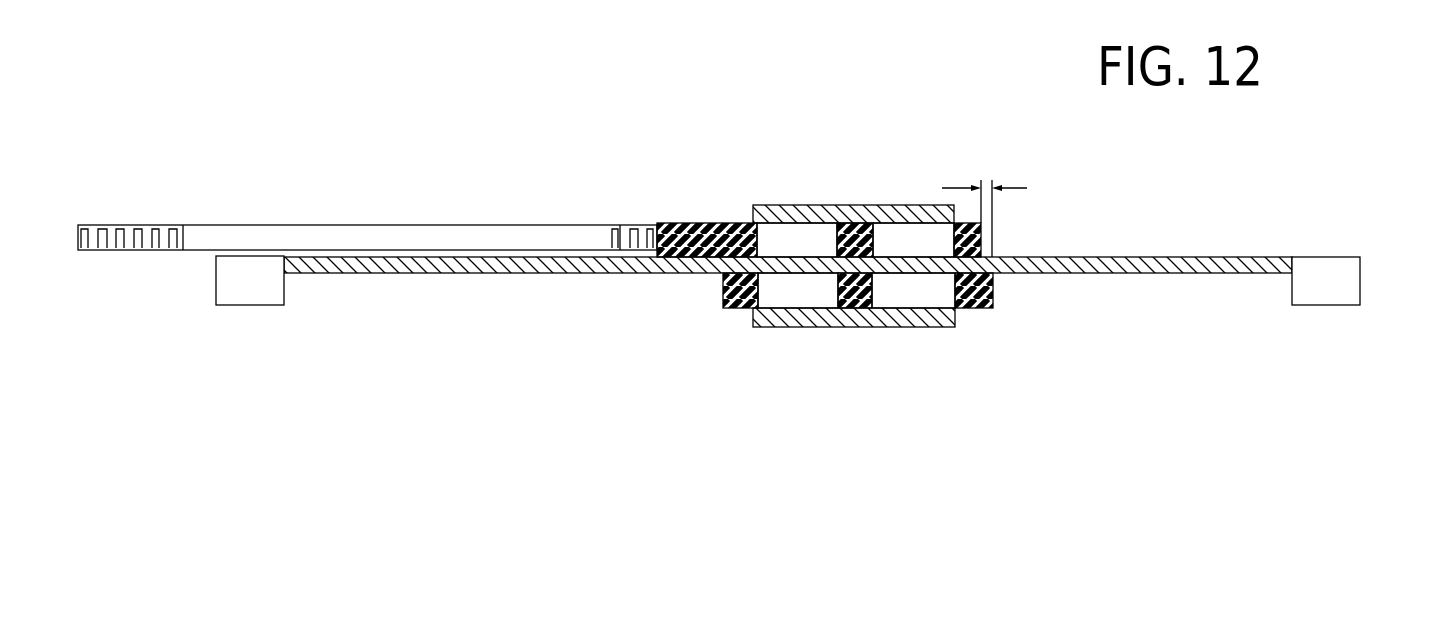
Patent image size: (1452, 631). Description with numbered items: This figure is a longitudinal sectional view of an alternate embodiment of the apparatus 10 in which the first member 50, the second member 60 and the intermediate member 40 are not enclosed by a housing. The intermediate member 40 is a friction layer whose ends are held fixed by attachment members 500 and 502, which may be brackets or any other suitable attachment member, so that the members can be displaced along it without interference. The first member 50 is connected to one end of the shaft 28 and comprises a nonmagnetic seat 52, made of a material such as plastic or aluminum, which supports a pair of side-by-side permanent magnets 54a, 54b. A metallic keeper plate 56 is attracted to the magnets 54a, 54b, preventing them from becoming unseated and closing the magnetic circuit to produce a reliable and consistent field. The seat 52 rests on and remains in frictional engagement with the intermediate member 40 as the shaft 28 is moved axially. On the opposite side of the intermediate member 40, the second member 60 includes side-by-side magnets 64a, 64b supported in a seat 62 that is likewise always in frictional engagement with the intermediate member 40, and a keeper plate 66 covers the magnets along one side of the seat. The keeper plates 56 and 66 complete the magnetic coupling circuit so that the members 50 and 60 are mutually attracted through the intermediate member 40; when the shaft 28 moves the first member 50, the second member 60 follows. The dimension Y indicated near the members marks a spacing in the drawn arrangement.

The fluid handling device 10 is at (557, 119).
The shaft 28 is at (328, 227).
The intermediate member 40 is at (1185, 260).
The first member 50 is at (814, 172).
The nonmagnetic seat 52 is at (690, 225).
The permanent magnet 54a is at (810, 235).
The permanent magnet 54b is at (930, 235).
The keeper plate 56 is at (753, 205).
The second member 60 is at (900, 350).
The seat 62 is at (725, 297).
The magnet 64a is at (792, 293).
The magnet 64b is at (922, 293).
The keeper plate 66 is at (858, 320).
The attachment member 500 is at (252, 305).
The attachment member 502 is at (1328, 305).
The gap dimension Y is at (987, 180).